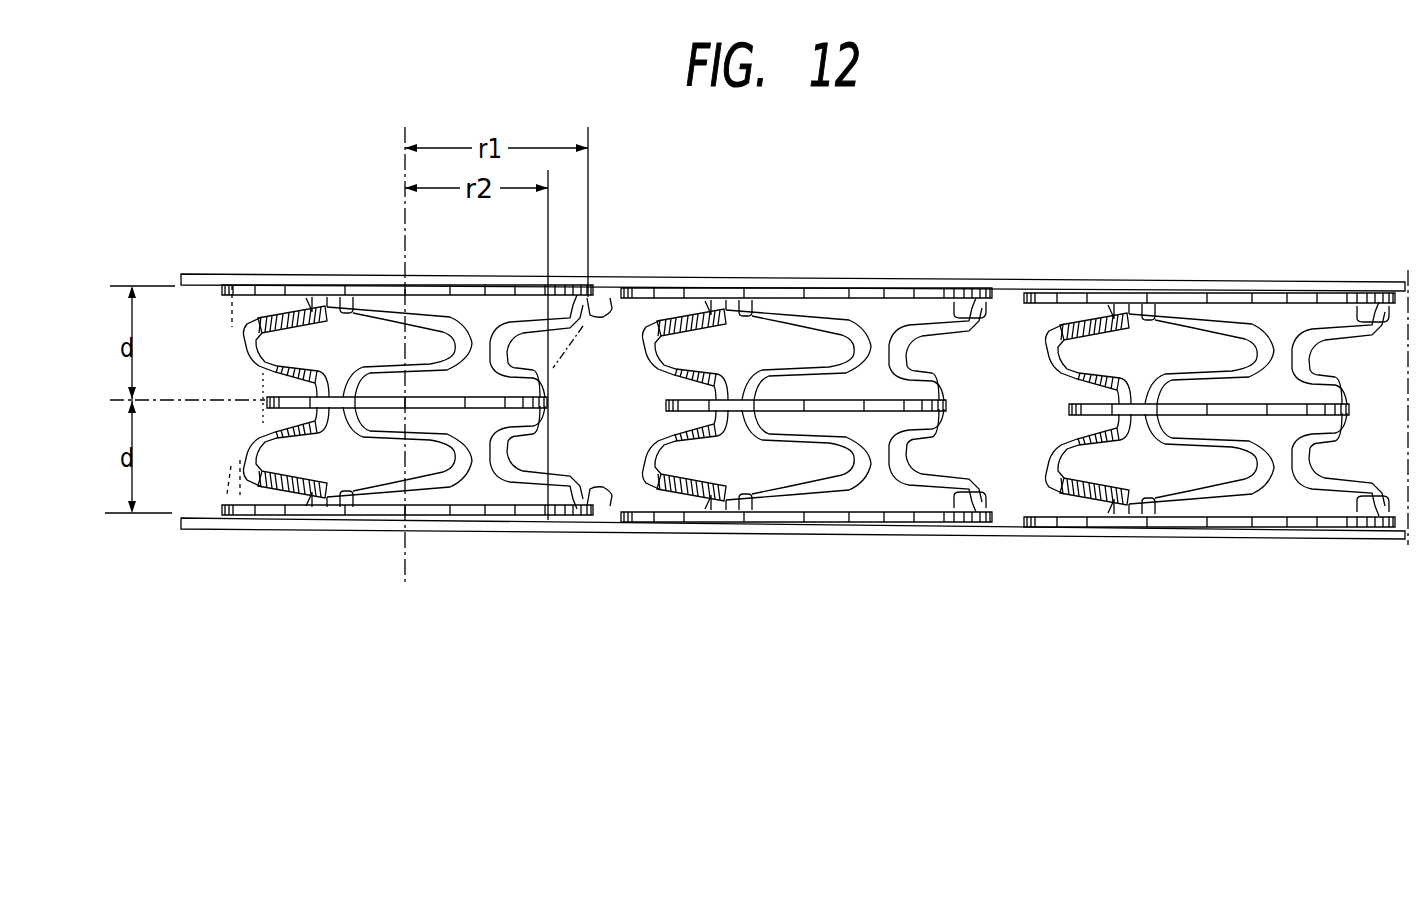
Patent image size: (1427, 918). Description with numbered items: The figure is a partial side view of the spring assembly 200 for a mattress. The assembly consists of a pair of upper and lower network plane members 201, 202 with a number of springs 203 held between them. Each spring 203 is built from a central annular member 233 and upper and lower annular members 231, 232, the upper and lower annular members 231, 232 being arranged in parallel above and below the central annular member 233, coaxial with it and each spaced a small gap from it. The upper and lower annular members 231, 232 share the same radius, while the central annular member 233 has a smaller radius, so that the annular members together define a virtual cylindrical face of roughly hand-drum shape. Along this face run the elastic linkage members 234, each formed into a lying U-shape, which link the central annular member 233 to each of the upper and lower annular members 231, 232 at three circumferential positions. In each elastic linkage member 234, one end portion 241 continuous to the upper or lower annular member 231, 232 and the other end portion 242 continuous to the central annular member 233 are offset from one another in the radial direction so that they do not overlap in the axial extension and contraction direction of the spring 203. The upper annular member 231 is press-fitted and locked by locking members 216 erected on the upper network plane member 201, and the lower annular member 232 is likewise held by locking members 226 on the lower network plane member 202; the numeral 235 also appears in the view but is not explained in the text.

The spring assembly 200 is at (769, 396).
The upper network plane member 201 is at (197, 273).
The lower network plane member 202 is at (200, 530).
The spring 203 is at (256, 280).
The locking member 216 is at (307, 294).
The locking member 226 is at (305, 501).
The upper annular member 231 is at (220, 291).
The lower annular member 232 is at (217, 508).
The central annular member 233 is at (265, 403).
The elastic linkage member 234 is at (462, 482).
The outer edge line 235 is at (230, 314).
The one end portion 241 is at (333, 502).
The other end portion 242 is at (366, 436).